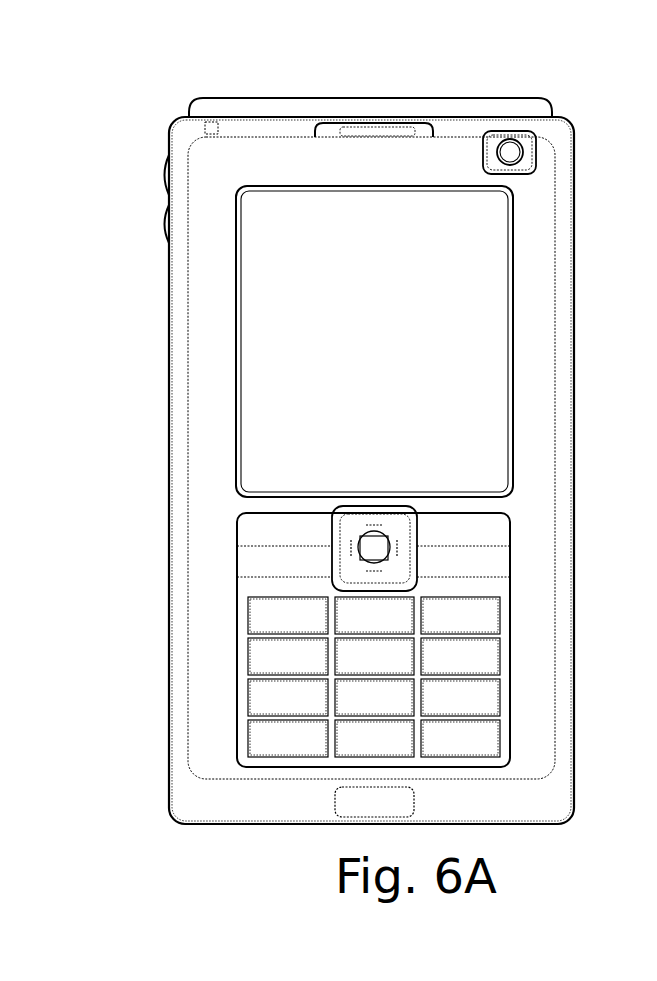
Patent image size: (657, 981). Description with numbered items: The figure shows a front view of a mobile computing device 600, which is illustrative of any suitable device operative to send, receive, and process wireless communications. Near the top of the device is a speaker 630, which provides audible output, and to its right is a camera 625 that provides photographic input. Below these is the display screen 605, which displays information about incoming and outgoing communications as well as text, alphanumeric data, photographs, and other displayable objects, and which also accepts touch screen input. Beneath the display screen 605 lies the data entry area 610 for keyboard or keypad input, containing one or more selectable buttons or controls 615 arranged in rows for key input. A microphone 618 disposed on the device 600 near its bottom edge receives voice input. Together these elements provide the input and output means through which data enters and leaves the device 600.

The mobile computing device 600 is at (169, 122).
The display screen 605 is at (273, 324).
The data entry area 610 is at (237, 556).
The selectable buttons or controls 615 is at (262, 657).
The microphone 618 is at (335, 802).
The camera 625 is at (532, 157).
The speaker 630 is at (417, 130).